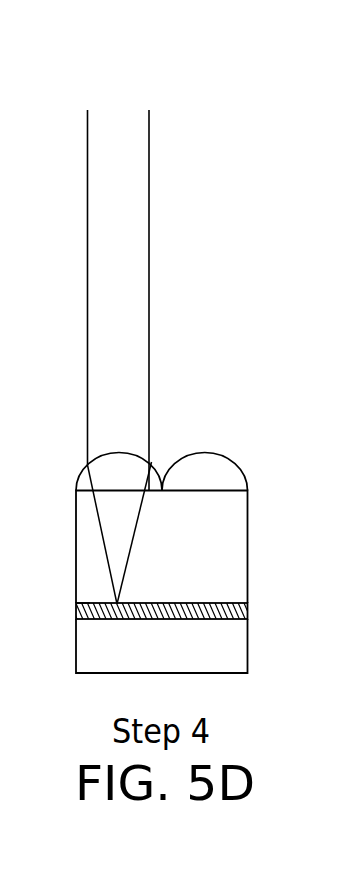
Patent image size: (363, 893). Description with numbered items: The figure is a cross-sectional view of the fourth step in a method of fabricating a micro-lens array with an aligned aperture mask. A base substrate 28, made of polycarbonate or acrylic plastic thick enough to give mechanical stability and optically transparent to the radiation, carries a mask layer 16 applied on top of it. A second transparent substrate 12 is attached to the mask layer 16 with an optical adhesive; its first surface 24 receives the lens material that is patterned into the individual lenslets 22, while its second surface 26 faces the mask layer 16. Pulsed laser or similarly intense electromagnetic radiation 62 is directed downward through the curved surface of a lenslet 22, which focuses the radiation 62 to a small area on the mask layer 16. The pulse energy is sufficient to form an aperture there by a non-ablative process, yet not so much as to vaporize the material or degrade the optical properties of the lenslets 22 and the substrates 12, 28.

The electromagnetic radiation 62 is at (149, 170).
The lenslet 22 is at (162, 488).
The first surface 24 is at (248, 490).
The substrate 12 is at (249, 548).
The mask layer 16 is at (242, 608).
The second surface 26 is at (76, 605).
The substrate 28 is at (250, 650).